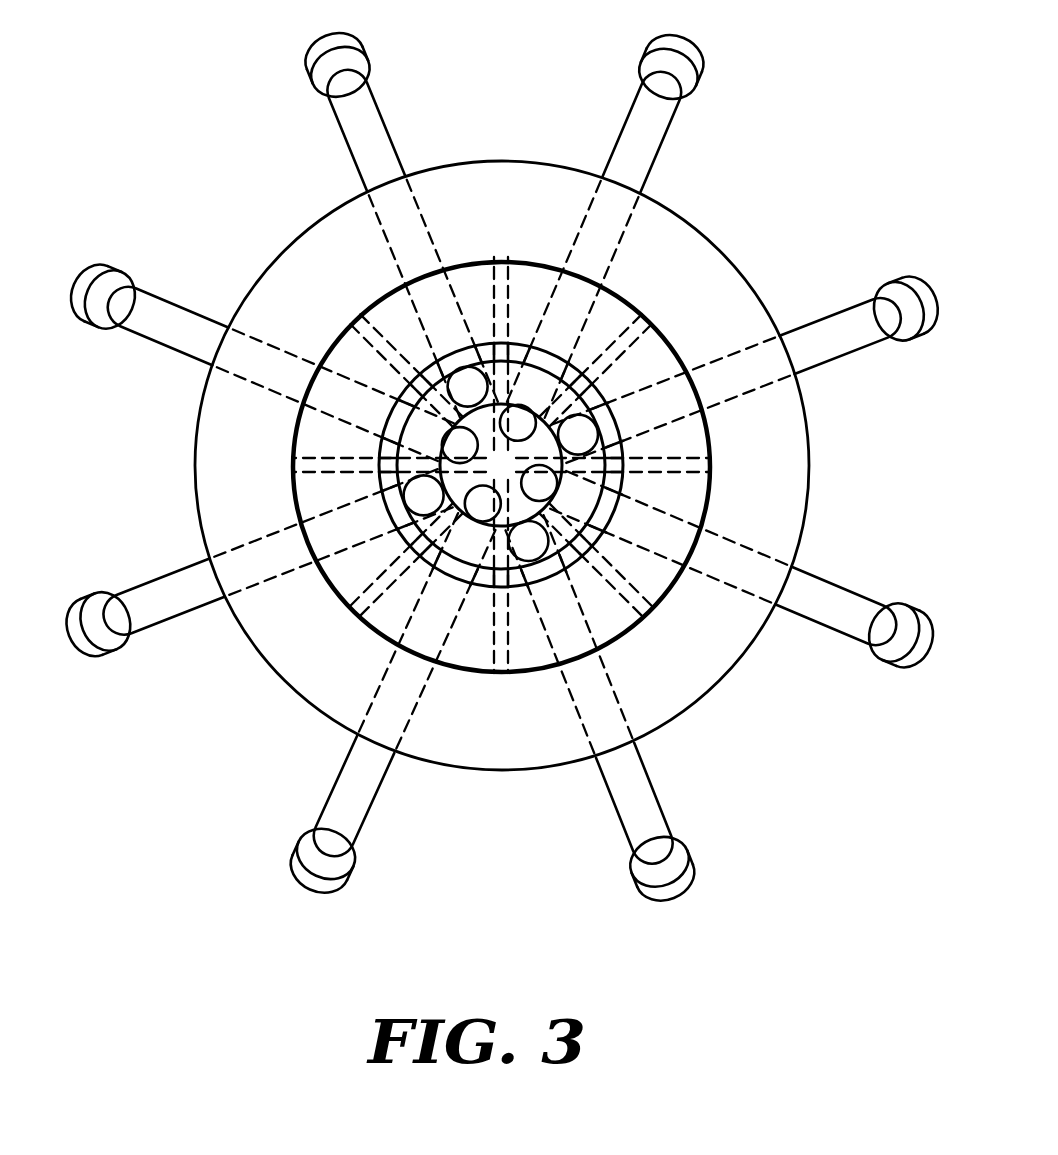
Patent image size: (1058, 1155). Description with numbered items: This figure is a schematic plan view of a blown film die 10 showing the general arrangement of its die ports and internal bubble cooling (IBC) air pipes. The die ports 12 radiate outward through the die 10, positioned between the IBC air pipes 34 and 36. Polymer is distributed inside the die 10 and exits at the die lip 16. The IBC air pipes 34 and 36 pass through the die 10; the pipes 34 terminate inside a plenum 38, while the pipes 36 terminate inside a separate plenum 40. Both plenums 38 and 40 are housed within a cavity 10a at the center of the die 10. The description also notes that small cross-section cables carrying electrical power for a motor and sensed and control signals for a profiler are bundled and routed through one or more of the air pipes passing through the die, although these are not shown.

The die 10 is at (810, 467).
The cavity 10a is at (400, 390).
The die ports 12 is at (340, 470).
The die lip 16 is at (323, 587).
The IBC air pipes 34 is at (825, 318).
The IBC air pipes 36 is at (815, 620).
The plenum 38 is at (512, 567).
The plenum 40 is at (558, 560).